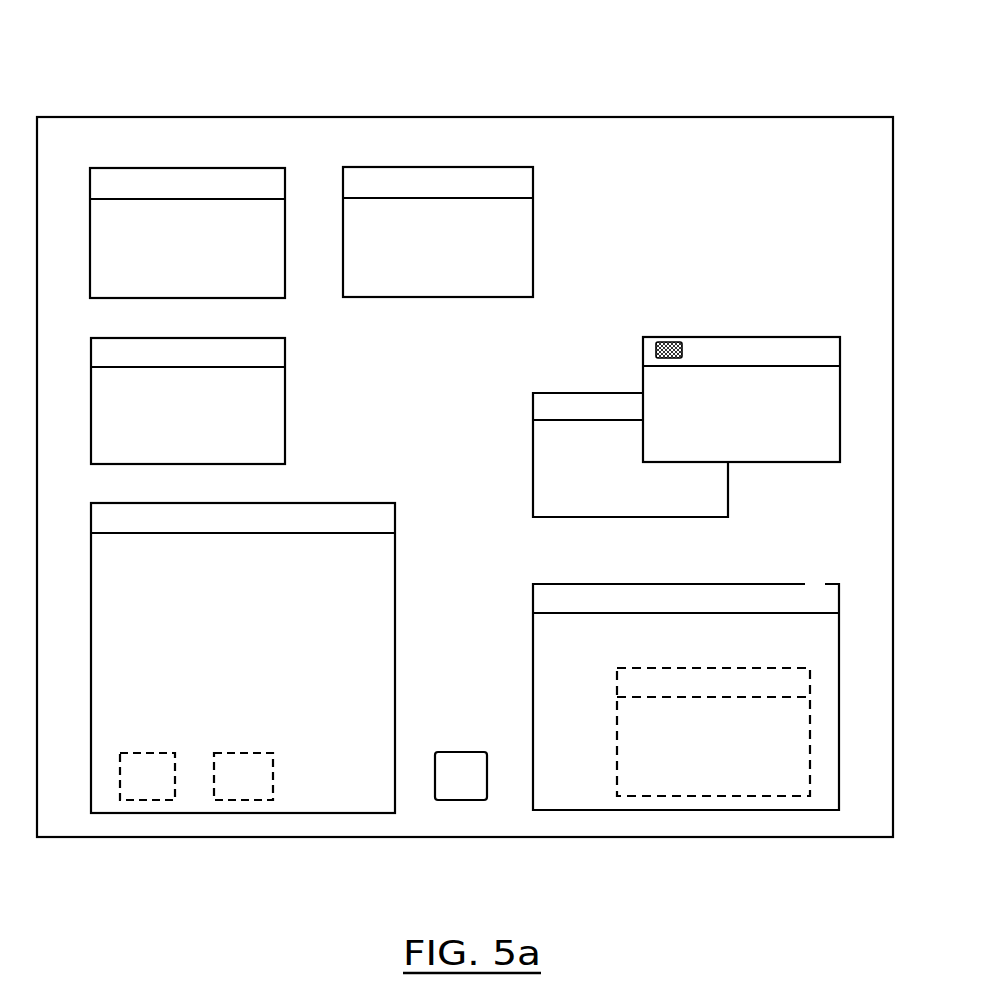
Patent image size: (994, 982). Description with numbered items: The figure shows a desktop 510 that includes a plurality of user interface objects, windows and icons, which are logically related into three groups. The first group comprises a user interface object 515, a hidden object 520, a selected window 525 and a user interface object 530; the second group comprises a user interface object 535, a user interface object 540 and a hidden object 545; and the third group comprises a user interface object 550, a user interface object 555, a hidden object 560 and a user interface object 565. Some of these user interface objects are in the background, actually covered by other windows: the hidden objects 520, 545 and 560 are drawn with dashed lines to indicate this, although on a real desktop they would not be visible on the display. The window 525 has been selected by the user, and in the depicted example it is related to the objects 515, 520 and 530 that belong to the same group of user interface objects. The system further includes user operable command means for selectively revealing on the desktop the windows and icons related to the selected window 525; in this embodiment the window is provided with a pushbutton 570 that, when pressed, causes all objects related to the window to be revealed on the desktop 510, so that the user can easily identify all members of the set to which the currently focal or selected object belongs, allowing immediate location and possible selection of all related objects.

The desktop 510 is at (101, 95).
The user interface object 515 is at (286, 278).
The user interface object 540 is at (535, 237).
The user interface object 535 is at (287, 412).
The user interface object 550 is at (340, 501).
The user interface object 530 is at (532, 425).
The selected window 525 is at (848, 297).
The pushbutton 570 is at (703, 298).
The user interface object 555 is at (830, 547).
The hidden object 560 is at (617, 727).
The user interface object 565 is at (475, 712).
The hidden object 520 is at (153, 752).
The hidden object 545 is at (242, 752).